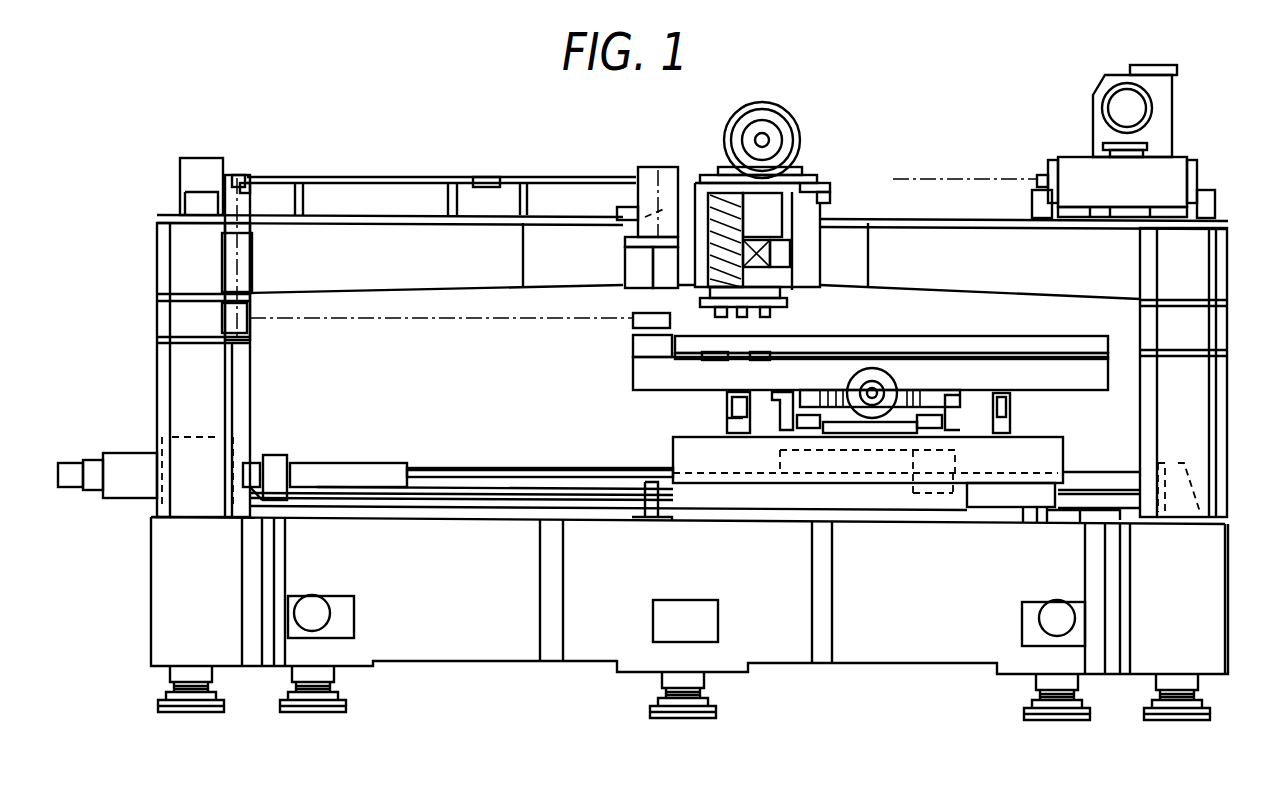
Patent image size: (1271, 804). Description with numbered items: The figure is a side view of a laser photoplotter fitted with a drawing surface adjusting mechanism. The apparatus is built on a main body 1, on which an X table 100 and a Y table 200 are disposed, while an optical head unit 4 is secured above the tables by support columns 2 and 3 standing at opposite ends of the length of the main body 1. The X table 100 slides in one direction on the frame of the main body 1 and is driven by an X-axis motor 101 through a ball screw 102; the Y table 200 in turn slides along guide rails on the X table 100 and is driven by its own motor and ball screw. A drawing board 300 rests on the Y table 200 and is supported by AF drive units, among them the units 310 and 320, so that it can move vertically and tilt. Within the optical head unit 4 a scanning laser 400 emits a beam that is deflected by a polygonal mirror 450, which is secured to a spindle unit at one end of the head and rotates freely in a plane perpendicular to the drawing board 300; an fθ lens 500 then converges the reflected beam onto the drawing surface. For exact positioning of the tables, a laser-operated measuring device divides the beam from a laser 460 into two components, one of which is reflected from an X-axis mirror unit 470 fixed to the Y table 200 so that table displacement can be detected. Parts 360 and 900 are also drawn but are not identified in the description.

The main body 1 is at (495, 647).
The support column 2 is at (155, 388).
The support column 3 is at (1218, 408).
The optical head unit 4 is at (850, 233).
The X table 100 is at (1042, 452).
The X-axis motor 101 is at (72, 470).
The ball screw 102 is at (455, 468).
The Y table 200 is at (645, 375).
The drawing board 300 is at (992, 347).
The AF drive unit 310 is at (1032, 355).
The AF drive unit 320 is at (712, 358).
The carriage block 360 is at (750, 357).
The scanning laser 400 is at (1175, 168).
The polygonal mirror 450 is at (782, 127).
The laser 460 is at (212, 168).
The X-axis mirror unit 470 is at (633, 320).
The fθ lens 500 is at (725, 200).
The mounting flange 900 is at (747, 325).